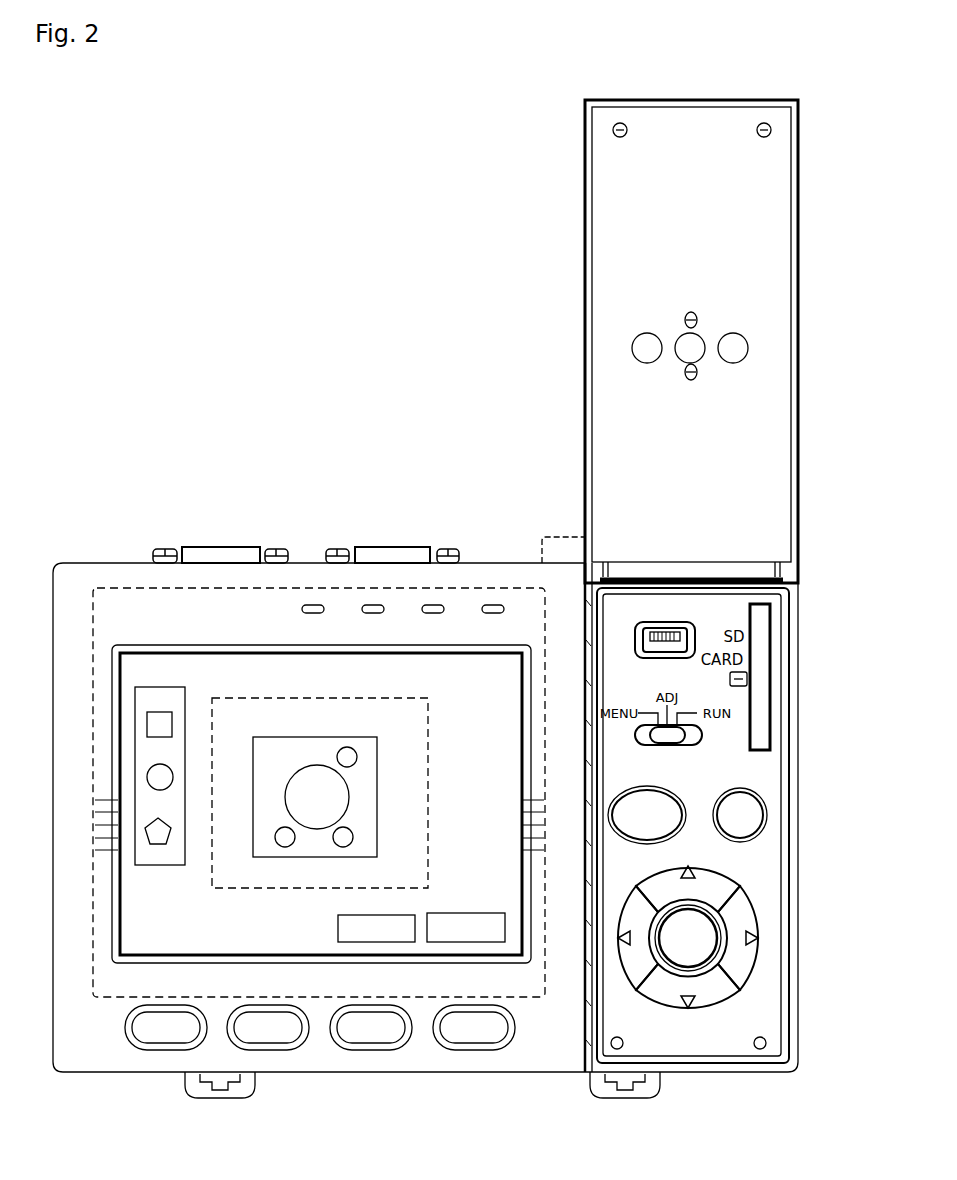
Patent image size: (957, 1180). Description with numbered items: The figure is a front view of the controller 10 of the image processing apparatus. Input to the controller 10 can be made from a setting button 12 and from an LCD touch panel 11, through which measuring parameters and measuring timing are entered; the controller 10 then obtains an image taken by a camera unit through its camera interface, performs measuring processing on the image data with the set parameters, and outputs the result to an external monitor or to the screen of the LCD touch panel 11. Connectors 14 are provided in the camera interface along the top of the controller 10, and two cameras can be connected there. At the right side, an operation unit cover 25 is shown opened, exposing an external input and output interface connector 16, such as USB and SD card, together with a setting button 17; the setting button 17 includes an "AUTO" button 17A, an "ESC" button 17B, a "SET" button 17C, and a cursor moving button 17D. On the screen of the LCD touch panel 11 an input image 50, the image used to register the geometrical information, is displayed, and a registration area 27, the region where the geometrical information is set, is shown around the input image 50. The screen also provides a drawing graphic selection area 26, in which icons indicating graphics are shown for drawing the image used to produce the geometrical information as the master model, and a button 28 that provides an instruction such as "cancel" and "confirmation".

The controller 10 is at (141, 512).
The LCD touch panel 11 is at (158, 670).
The setting button 12 is at (163, 1028).
The connectors 14 is at (220, 550).
The external input and output interface connector 16 is at (637, 640).
The setting button 17 is at (855, 760).
The AUTO button 17A is at (667, 790).
The ESC button 17B is at (767, 815).
The SET button 17C is at (707, 920).
The cursor moving button 17D is at (762, 922).
The operation unit cover 25 is at (630, 275).
The drawing graphic selection area 26 is at (145, 867).
The registration area 27 is at (220, 697).
The button 28 is at (503, 930).
The input image 50 is at (267, 733).